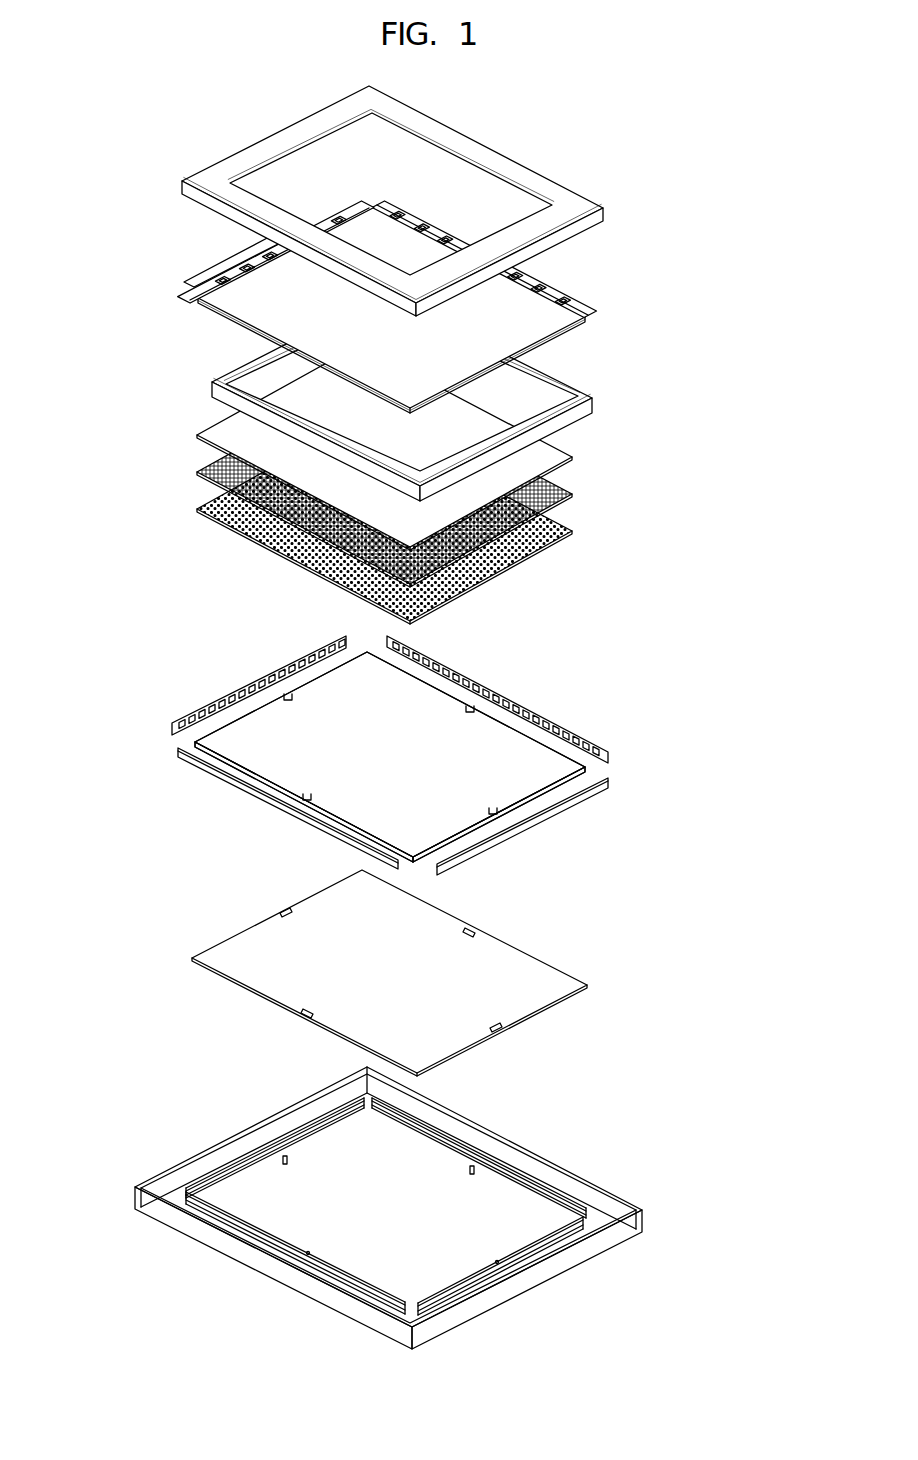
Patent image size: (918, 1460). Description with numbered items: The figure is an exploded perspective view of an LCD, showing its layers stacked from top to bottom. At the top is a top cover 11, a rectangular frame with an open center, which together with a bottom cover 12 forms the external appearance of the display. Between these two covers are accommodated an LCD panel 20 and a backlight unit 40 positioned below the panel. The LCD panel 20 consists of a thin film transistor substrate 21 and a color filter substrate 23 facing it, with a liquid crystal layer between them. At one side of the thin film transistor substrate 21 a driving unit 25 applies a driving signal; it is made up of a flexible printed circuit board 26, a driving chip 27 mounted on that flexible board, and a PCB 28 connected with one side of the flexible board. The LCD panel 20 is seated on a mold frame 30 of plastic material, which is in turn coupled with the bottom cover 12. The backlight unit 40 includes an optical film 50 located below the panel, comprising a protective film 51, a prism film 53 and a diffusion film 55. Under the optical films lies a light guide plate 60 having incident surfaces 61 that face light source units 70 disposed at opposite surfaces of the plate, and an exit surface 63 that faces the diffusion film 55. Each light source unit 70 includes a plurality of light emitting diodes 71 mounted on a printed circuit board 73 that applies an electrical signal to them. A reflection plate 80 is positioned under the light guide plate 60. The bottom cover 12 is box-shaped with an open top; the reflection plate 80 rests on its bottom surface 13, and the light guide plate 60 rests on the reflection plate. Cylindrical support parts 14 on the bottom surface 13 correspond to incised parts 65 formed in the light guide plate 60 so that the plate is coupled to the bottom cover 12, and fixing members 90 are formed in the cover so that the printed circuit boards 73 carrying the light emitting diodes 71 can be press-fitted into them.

The top cover 11 is at (573, 193).
The bottom cover 12 is at (600, 1187).
The bottom surface 13 is at (488, 1200).
The cylindrical support parts 14 is at (287, 1160).
The LCD panel 20 is at (449, 307).
The thin film transistor substrate 21 is at (583, 318).
The color filter substrate 23 is at (547, 313).
The driving unit 25 is at (215, 257).
The flexible printed circuit board 26 is at (205, 288).
The driving chip 27 is at (203, 282).
The PCB 28 is at (228, 265).
The mold frame 30 is at (588, 405).
The backlight unit 40 is at (720, 455).
The optical film 50 is at (447, 484).
The protective film 51 is at (563, 457).
The prism film 53 is at (563, 493).
The diffusion film 55 is at (560, 530).
The light guide plate 60 is at (528, 783).
The incident surfaces 61 is at (338, 820).
The exit surface 63 is at (422, 705).
The incised parts 65 is at (468, 710).
The light source units 70 is at (404, 764).
The light emitting diodes 71 is at (575, 750).
The printed circuit board 73 is at (565, 723).
The reflection plate 80 is at (527, 1005).
The fixing members 90 is at (208, 1205).